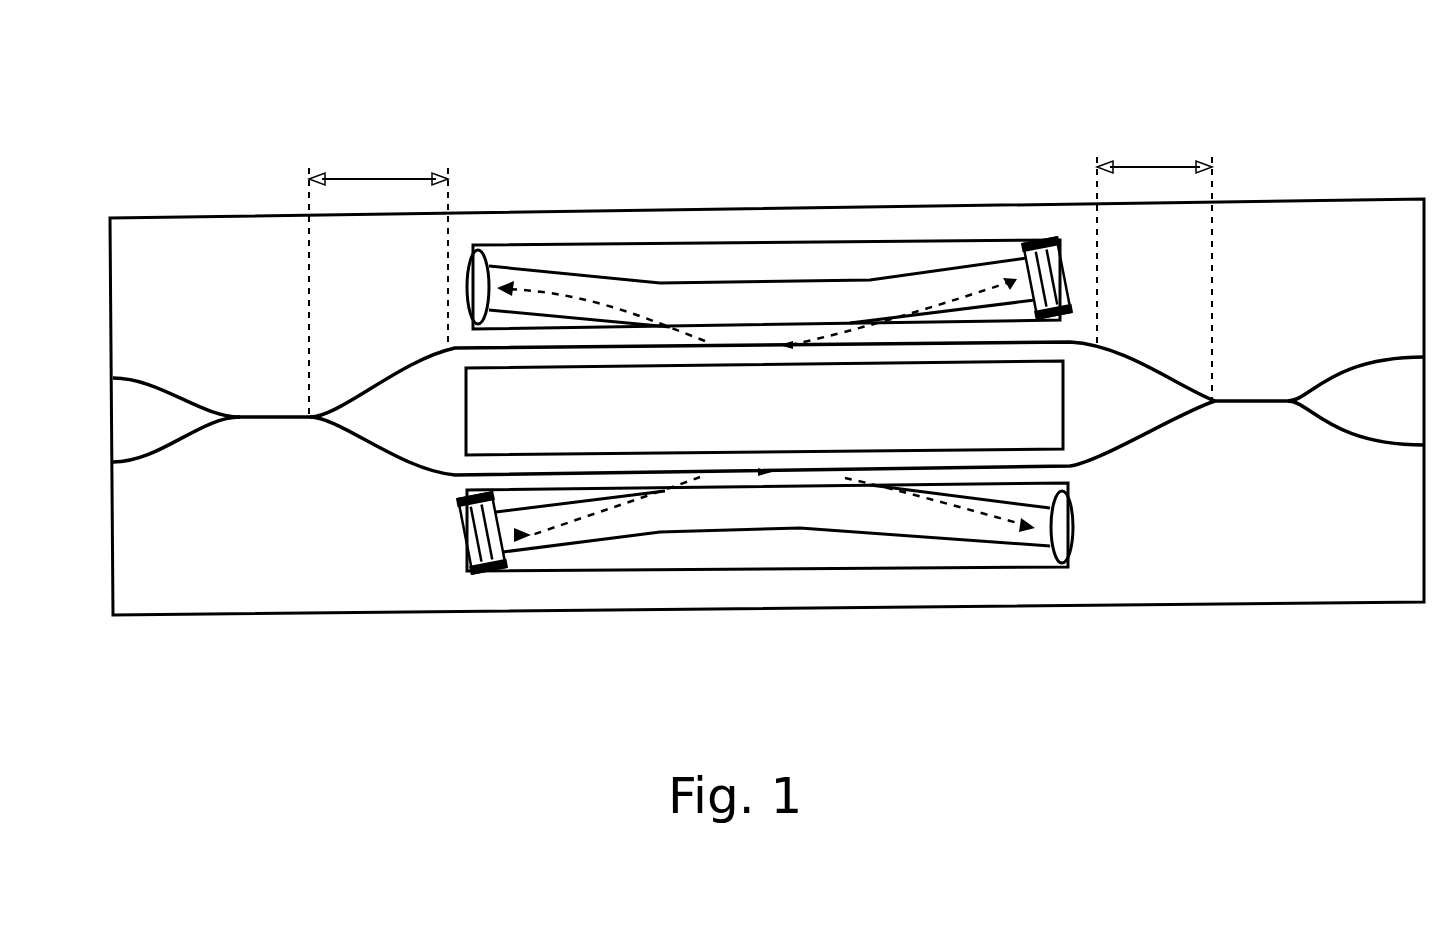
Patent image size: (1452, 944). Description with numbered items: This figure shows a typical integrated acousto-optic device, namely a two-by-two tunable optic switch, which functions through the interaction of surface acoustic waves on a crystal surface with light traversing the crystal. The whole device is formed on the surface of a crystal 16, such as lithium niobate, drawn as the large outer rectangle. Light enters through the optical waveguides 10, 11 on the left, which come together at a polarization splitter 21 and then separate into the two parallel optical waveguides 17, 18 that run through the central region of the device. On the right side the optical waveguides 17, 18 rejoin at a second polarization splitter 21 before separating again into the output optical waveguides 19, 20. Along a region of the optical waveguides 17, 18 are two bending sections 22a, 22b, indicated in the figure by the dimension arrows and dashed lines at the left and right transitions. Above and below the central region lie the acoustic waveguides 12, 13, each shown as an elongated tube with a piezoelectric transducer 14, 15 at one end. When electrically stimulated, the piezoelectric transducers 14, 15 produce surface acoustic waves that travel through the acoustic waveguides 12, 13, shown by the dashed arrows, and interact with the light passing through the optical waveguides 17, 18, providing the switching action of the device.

The optical waveguide 10 is at (150, 378).
The optical waveguide 11 is at (148, 462).
The acoustic waveguide 12 is at (895, 292).
The acoustic waveguide 13 is at (897, 503).
The piezoelectric transducer 14 is at (1068, 292).
The piezoelectric transducer 15 is at (462, 565).
The crystal 16 is at (1242, 602).
The optical waveguide 17 is at (1133, 353).
The optical waveguide 18 is at (1127, 452).
The optical waveguide 19 is at (1383, 360).
The optical waveguide 20 is at (1363, 445).
The polarization splitter 21 is at (275, 417).
The bending section 22a is at (388, 178).
The bending section 22b is at (1147, 165).